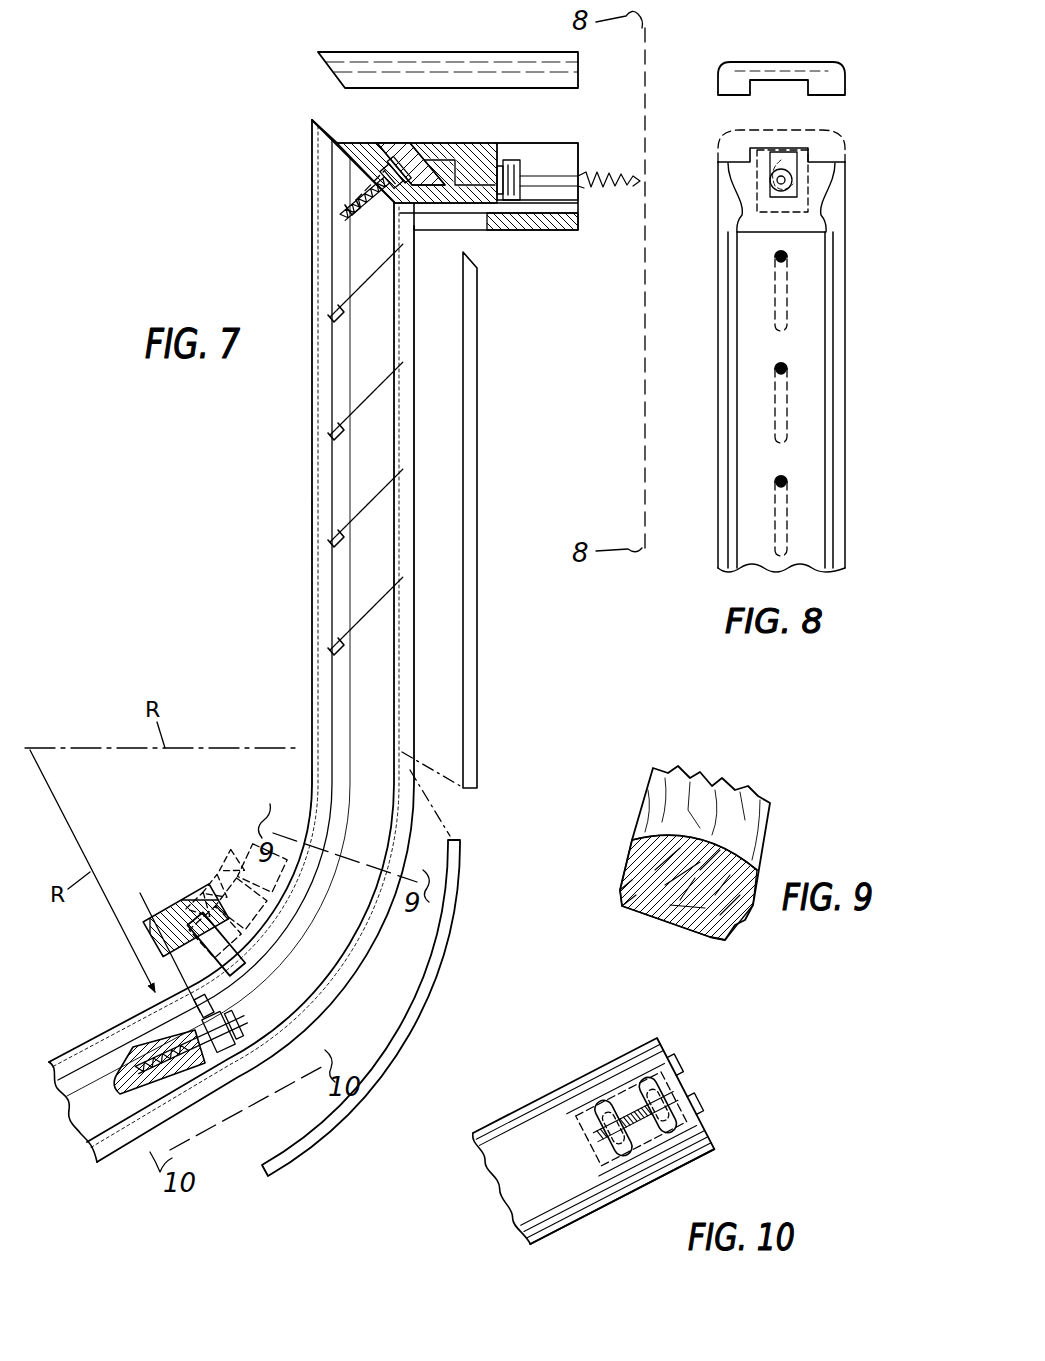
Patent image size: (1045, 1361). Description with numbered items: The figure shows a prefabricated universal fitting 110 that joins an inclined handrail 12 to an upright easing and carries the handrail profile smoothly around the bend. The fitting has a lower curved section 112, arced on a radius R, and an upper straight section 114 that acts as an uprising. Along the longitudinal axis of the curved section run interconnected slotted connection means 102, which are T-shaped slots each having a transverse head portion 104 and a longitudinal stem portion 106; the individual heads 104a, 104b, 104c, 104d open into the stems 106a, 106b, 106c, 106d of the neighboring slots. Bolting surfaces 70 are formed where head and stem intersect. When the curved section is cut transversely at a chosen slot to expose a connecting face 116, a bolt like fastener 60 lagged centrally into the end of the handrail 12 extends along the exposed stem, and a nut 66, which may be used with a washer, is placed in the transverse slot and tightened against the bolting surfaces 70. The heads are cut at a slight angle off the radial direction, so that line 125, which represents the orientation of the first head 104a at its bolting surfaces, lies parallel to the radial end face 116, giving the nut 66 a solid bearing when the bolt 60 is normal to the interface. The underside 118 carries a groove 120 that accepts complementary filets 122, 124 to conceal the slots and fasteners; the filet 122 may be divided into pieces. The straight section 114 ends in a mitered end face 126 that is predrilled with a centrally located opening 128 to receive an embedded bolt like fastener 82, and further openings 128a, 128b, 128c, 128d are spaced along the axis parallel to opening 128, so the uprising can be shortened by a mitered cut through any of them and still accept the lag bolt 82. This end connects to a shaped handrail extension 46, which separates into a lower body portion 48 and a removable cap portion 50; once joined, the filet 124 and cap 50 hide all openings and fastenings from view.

In FIG. 7, the handrail 12 is at (61, 1068).
In FIG. 10, the handrail 12 is at (495, 1128).
In FIG. 7, the handrail extension 46 is at (568, 134).
In FIG. 7, the lower body portion 48 is at (463, 150).
In FIG. 8, the lower body portion 48 is at (730, 180).
In FIG. 7, the cap portion 50 is at (445, 52).
In FIG. 8, the cap portion 50 is at (777, 62).
In FIG. 7, the bolt like fastener 60 is at (587, 170).
In FIG. 7, the nut 66 is at (258, 1092).
In FIG. 7, the bolting surfaces 70 is at (204, 995).
In FIG. 10, the bolting surfaces 70 is at (600, 1102).
In FIG. 7, the embedded bolt like fastener 82 is at (403, 143).
In FIG. 7, the slotted connection means 102 is at (333, 946).
In FIG. 10, the slotted connection means 102 is at (668, 1153).
In FIG. 10, the transverse head portion 104 is at (690, 1116).
In FIG. 7, the first transverse head portion 104a is at (252, 1048).
In FIG. 7, the transverse head portion 104b is at (290, 1003).
In FIG. 7, the transverse head portion 104c is at (305, 962).
In FIG. 7, the transverse head portion 104d is at (345, 918).
In FIG. 10, the longitudinal stem portion 106 is at (583, 1130).
In FIG. 7, the longitudinal stem portion 106a is at (187, 1045).
In FIG. 7, the longitudinal stem portion 106b is at (268, 958).
In FIG. 7, the longitudinal stem portion 106c is at (293, 935).
In FIG. 7, the longitudinal stem portion 106d is at (318, 905).
In FIG. 7, the universal fitting 110 is at (176, 563).
In FIG. 9, the universal fitting 110 is at (638, 797).
In FIG. 7, the lower curved section 112 is at (310, 787).
In FIG. 7, the upper straight section 114 is at (311, 680).
In FIG. 8, the upper straight section 114 is at (727, 347).
In FIG. 7, the connecting face 116 is at (205, 1015).
In FIG. 10, the connecting face 116 is at (588, 1196).
In FIG. 7, the underside 118 is at (413, 731).
In FIG. 9, the underside 118 is at (633, 912).
In FIG. 9, the groove 120 is at (660, 912).
In FIG. 7, the filet 122 is at (332, 1130).
In FIG. 7, the filet 124 is at (476, 685).
In FIG. 7, the line 125 is at (170, 938).
In FIG. 7, the mitered end face 126 is at (343, 143).
In FIG. 7, the centrally located opening 128 is at (342, 213).
In FIG. 7, the predrilled opening 128a is at (345, 300).
In FIG. 8, the predrilled opening 128a is at (775, 278).
In FIG. 7, the predrilled opening 128b is at (342, 415).
In FIG. 8, the predrilled opening 128b is at (773, 398).
In FIG. 7, the predrilled opening 128c is at (340, 528).
In FIG. 8, the predrilled opening 128c is at (773, 513).
In FIG. 7, the predrilled opening 128d is at (345, 628).